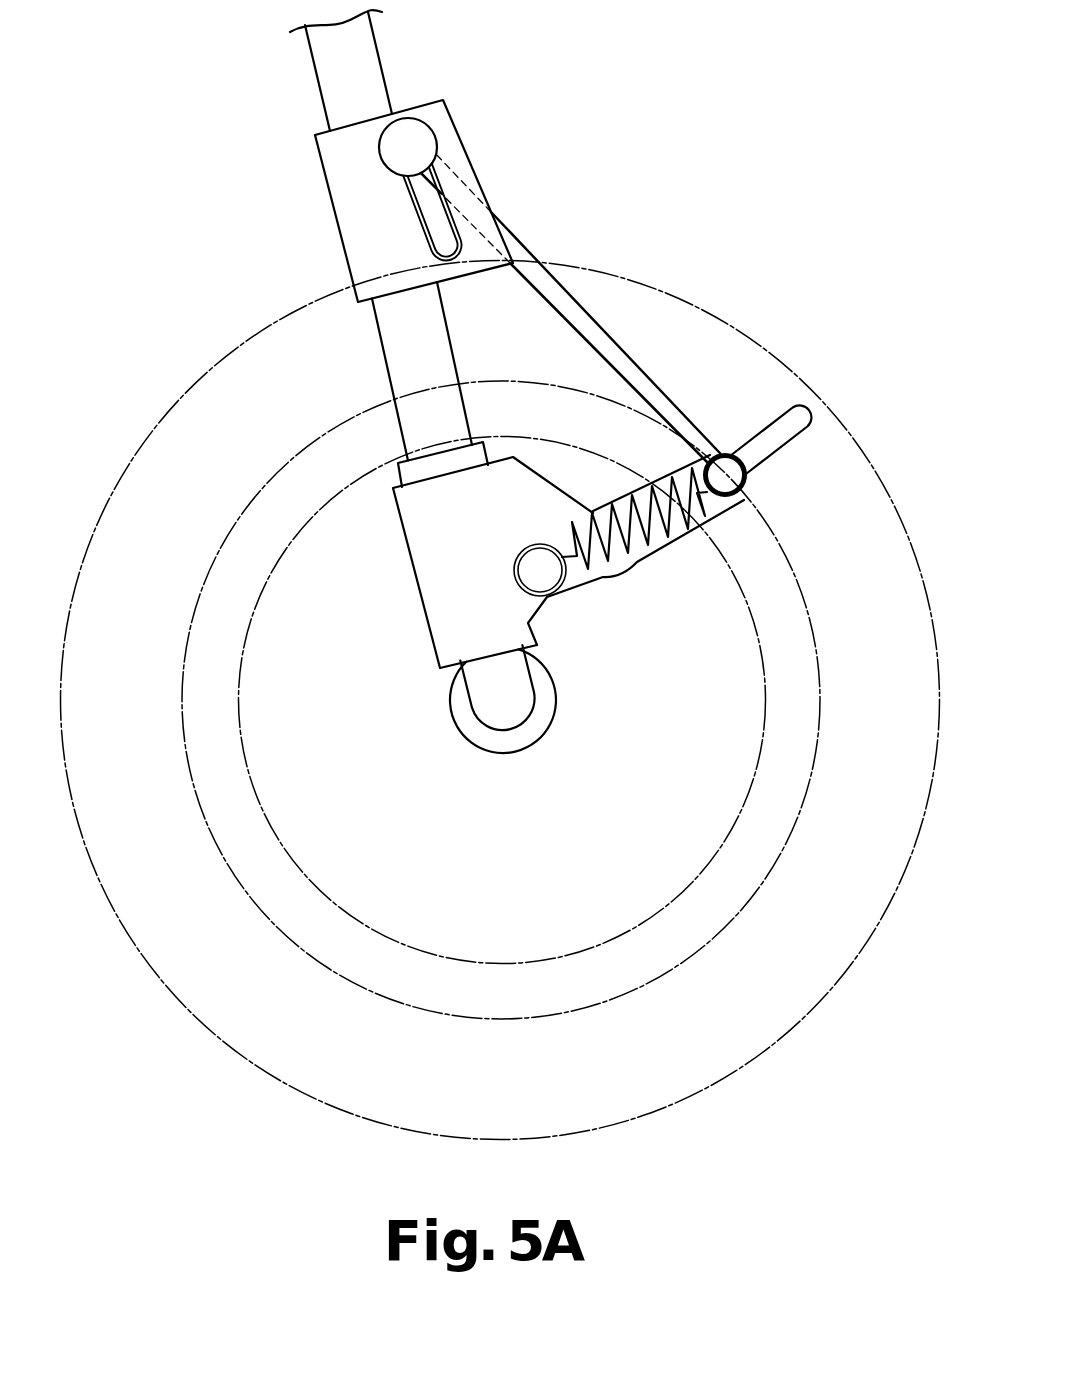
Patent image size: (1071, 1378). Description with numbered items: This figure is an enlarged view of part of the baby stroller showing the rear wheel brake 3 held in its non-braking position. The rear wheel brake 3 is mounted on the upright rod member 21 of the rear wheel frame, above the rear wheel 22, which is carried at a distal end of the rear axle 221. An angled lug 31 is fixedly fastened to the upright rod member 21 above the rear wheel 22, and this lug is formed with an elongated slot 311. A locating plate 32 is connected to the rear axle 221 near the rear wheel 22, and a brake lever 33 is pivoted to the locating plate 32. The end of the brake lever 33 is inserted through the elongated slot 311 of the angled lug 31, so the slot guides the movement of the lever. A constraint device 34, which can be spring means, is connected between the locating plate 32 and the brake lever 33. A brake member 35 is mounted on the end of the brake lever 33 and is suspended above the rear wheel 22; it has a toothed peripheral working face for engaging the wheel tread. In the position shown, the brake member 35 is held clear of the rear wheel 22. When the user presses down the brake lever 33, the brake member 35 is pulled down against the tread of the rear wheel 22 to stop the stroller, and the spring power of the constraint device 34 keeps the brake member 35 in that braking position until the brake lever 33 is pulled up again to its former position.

The rear wheel brake 3 is at (510, 377).
The upright rod member 21 is at (368, 63).
The rear wheel 22 is at (715, 1035).
The rear axle 221 is at (508, 710).
The angled lug 31 is at (338, 156).
The elongated slot 311 is at (441, 222).
The locating plate 32 is at (440, 580).
The brake lever 33 is at (628, 367).
The constraint device 34 is at (710, 432).
The brake member 35 is at (412, 150).